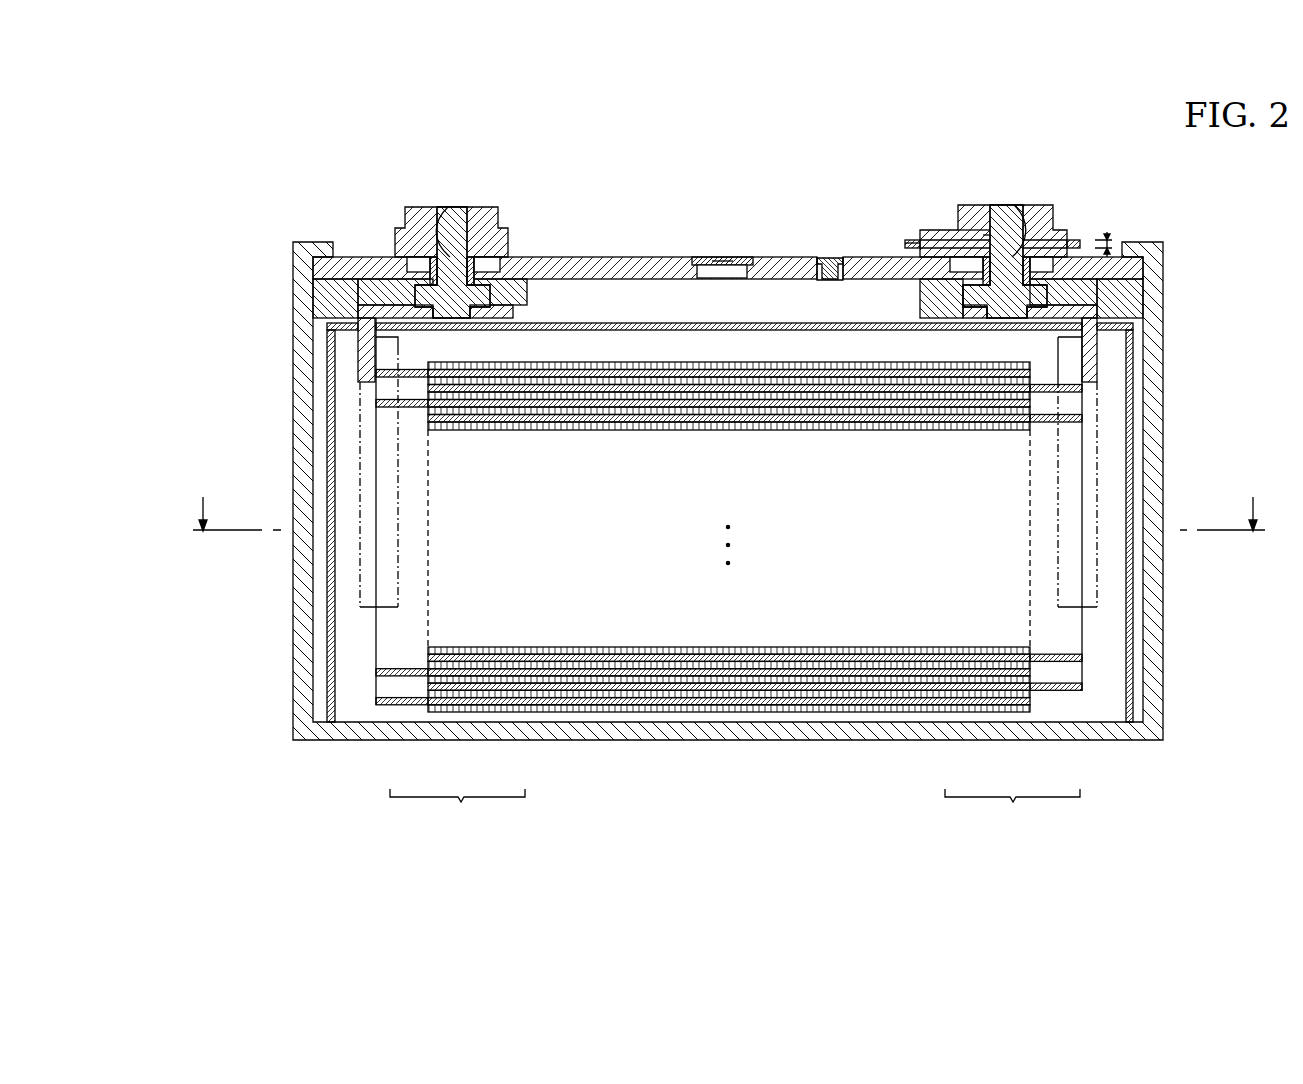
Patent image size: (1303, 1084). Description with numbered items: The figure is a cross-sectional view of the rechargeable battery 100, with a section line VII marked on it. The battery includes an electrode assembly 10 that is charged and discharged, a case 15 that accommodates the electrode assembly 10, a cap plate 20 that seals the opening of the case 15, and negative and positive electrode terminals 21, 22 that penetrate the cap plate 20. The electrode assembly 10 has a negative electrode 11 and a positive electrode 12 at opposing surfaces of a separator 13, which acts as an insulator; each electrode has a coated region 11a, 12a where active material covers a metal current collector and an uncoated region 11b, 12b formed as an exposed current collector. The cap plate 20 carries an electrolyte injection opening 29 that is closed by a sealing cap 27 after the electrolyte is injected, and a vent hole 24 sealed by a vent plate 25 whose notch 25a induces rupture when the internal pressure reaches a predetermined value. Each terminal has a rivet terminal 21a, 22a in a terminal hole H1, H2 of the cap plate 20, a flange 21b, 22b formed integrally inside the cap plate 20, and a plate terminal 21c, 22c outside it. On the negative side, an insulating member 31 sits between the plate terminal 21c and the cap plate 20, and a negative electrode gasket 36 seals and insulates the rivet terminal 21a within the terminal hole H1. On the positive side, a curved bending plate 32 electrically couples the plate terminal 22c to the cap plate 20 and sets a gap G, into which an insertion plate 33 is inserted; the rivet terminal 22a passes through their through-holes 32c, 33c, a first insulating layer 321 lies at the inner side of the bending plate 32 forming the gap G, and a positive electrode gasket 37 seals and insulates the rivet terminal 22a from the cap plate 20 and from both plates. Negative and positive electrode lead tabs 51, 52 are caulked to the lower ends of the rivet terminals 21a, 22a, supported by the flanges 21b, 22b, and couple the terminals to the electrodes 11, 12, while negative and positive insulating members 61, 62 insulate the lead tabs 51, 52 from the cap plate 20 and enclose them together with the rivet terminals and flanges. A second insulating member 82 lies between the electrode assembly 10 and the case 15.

The rechargeable battery 100 is at (727, 146).
The electrode assembly 10 is at (853, 713).
The negative electrode 11 is at (457, 810).
The coated region 11a is at (510, 708).
The uncoated region 11b is at (400, 708).
The positive electrode 12 is at (1012, 810).
The coated region 12a is at (955, 692).
The uncoated region 12b is at (1063, 692).
The separator 13 is at (745, 708).
The case 15 is at (1152, 462).
The cap plate 20 is at (612, 257).
The negative electrode terminal 21 is at (454, 197).
The rivet terminal 21a is at (452, 300).
The flange 21b is at (482, 318).
The plate terminal 21c is at (483, 207).
The positive electrode terminal 22 is at (1006, 197).
The rivet terminal 22a is at (1020, 315).
The flange 22b is at (977, 300).
The plate terminal 22c is at (1055, 230).
The vent hole 24 is at (725, 266).
The vent plate 25 is at (748, 259).
The notch 25a is at (718, 262).
The sealing cap 27 is at (842, 258).
The electrolyte injection opening 29 is at (828, 257).
The insulating member 31 is at (415, 207).
The bending plate 32 is at (930, 240).
The through-hole 32c is at (988, 235).
The insertion plate 33 is at (905, 243).
The through-hole 33c is at (962, 240).
The first insulating layer 321 is at (1072, 245).
The negative electrode gasket 36 is at (417, 264).
The positive electrode gasket 37 is at (925, 282).
The negative electrode lead tab 51 is at (358, 437).
The positive electrode lead tab 52 is at (1097, 353).
The negative insulating member 61 is at (328, 300).
The positive insulating member 62 is at (1125, 300).
The second insulating member 82 is at (1130, 405).
The gap G is at (1108, 246).
The terminal hole H1 is at (447, 210).
The terminal hole H2 is at (1015, 215).
The section line VII- VII is at (730, 502).